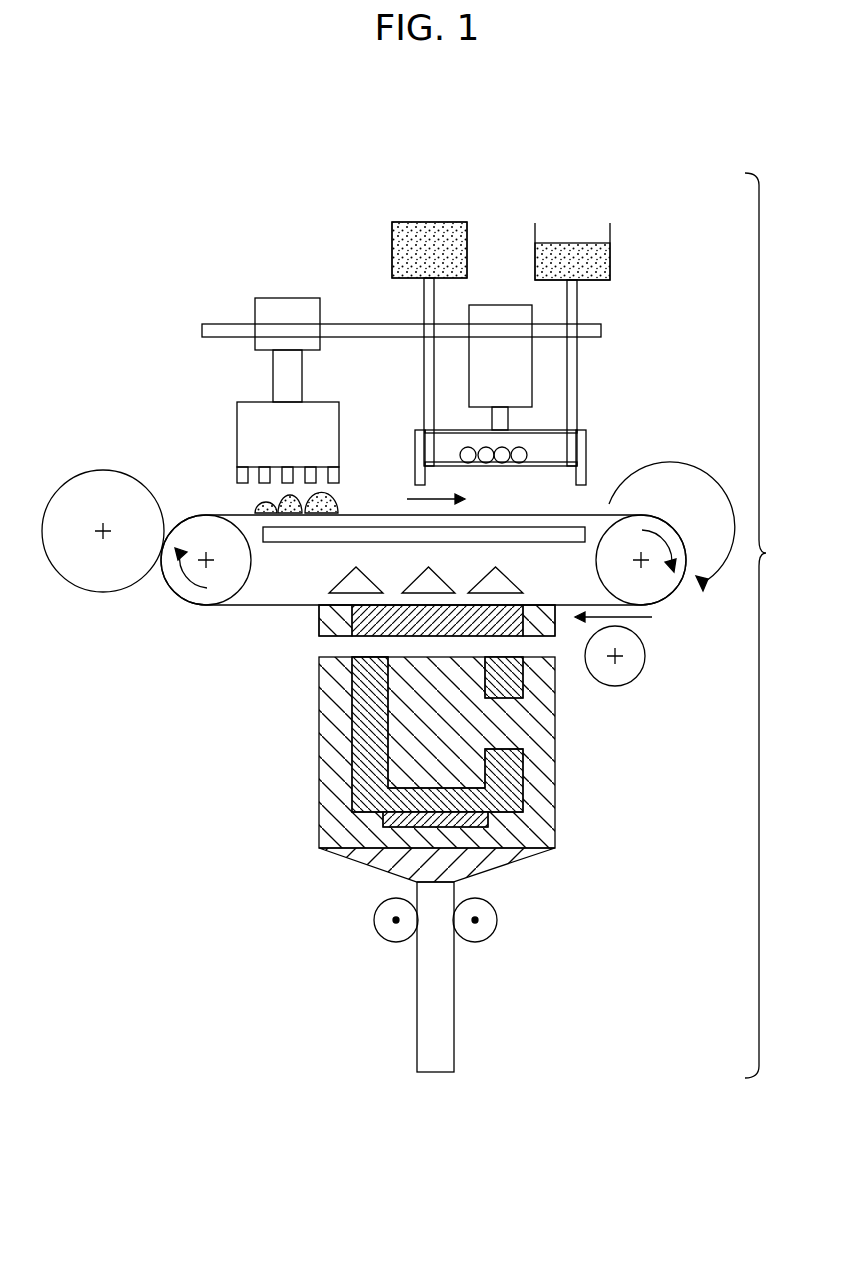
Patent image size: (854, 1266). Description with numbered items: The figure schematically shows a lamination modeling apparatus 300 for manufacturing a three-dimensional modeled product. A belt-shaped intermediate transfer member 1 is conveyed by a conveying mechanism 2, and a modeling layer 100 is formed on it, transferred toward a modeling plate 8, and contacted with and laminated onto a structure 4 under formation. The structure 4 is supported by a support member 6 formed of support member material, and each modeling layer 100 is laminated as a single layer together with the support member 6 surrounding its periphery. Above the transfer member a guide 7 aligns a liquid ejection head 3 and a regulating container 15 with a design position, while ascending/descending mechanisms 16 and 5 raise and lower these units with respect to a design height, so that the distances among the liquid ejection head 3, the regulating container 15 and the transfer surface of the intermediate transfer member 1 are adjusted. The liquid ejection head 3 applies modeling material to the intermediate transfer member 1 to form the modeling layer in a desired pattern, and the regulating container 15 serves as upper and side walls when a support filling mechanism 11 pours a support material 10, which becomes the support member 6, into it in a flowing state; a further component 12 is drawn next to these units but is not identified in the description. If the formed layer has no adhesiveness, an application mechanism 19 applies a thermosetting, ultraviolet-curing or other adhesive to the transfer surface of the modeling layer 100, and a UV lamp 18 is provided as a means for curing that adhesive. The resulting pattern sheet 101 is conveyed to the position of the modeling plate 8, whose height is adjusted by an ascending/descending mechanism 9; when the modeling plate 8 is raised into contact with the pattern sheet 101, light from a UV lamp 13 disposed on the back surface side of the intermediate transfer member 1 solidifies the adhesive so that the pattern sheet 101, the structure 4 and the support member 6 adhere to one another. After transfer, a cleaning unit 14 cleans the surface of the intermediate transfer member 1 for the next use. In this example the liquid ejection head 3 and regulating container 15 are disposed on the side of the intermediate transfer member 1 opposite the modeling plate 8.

The intermediate transfer member 1 is at (218, 513).
The conveying mechanism 2 is at (196, 532).
The liquid ejection head 3 is at (248, 417).
The structure 4 is at (337, 498).
The ascending/descending mechanism 5 is at (497, 303).
The support member 6 is at (515, 728).
The guide 7 is at (362, 324).
The modeling plate 8 is at (505, 867).
The ascending/descending mechanism 9 is at (454, 995).
The support material 10 is at (440, 222).
The support filling mechanism 11 is at (408, 225).
The liquid tank 12 is at (568, 232).
The UV lamp 13 is at (527, 451).
The cleaning unit 14 is at (104, 470).
The regulating container 15 is at (586, 452).
The ascending/descending mechanism 16 is at (270, 298).
The UV lamp 18 is at (329, 593).
The application mechanism 19 is at (645, 657).
The modeling layer 100 is at (372, 636).
The pattern sheet 101 is at (177, 655).
The modeling apparatus 300 is at (780, 625).